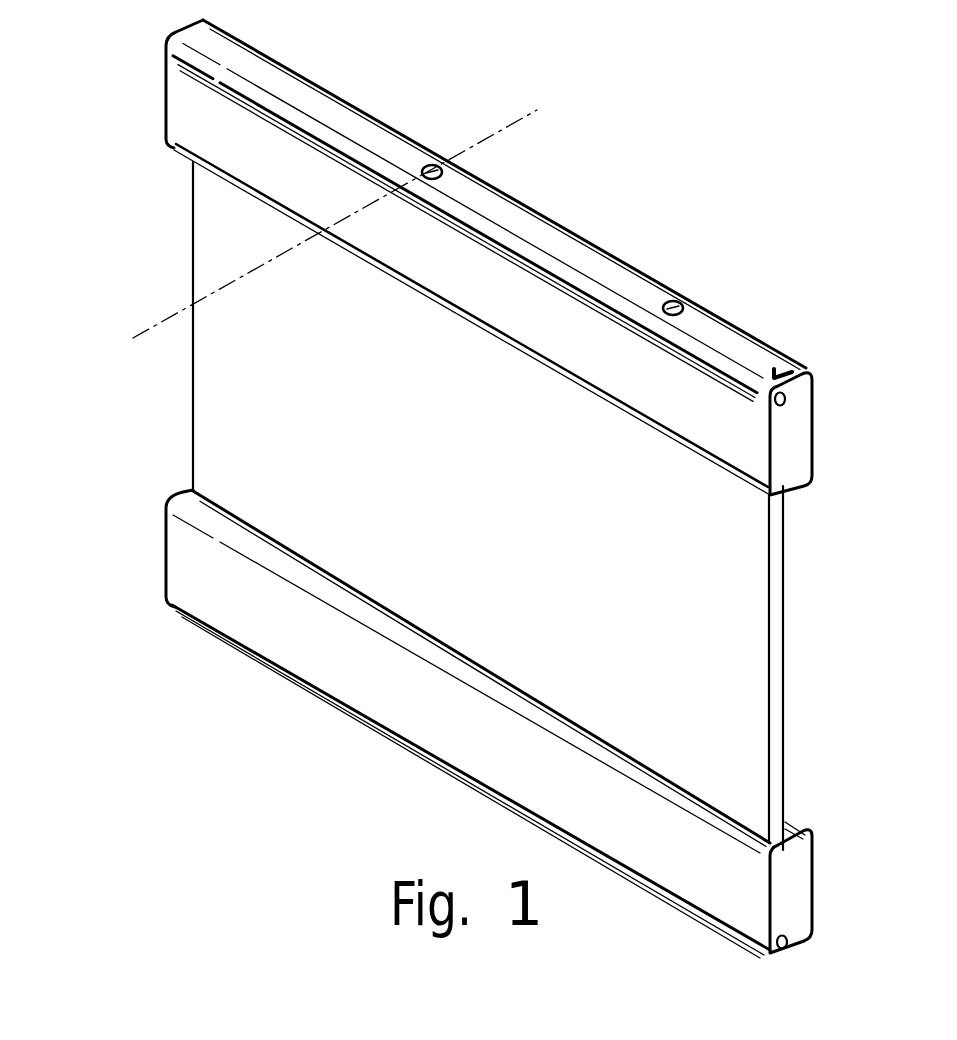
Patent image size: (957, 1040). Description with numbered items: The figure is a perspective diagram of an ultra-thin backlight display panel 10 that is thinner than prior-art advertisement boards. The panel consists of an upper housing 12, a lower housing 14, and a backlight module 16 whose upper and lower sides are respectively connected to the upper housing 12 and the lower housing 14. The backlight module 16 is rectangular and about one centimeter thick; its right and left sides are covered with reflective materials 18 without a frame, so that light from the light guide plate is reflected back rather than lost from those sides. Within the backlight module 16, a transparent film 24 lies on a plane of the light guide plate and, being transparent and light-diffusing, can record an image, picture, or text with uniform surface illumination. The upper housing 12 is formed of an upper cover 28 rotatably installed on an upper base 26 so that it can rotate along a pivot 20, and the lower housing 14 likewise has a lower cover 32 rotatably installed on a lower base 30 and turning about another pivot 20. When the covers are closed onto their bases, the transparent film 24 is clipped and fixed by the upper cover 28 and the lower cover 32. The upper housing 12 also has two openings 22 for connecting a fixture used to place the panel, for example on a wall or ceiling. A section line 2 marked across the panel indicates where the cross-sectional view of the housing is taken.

The ultra-thin backlight display panel 10 is at (733, 142).
The upper housing 12 is at (150, 84).
The lower housing 14 is at (150, 565).
The backlight module 16 is at (233, 438).
The reflective material 18 is at (780, 660).
The pivot 20 is at (788, 398).
The openings 22 is at (443, 178).
The transparent film 24 is at (215, 240).
The upper base 26 is at (797, 455).
The upper cover 28 is at (517, 313).
The lower base 30 is at (797, 887).
The lower cover 32 is at (323, 660).
The line 2— 2 is at (505, 109).